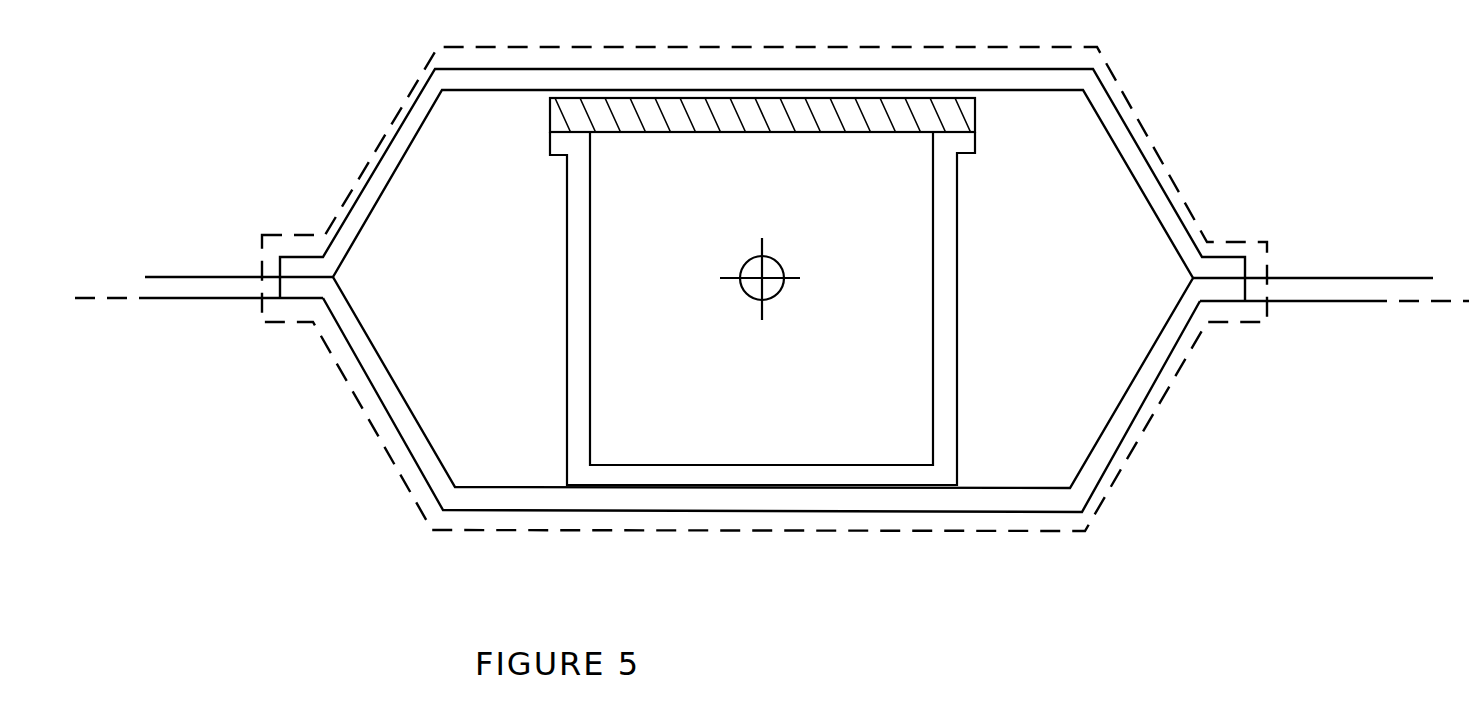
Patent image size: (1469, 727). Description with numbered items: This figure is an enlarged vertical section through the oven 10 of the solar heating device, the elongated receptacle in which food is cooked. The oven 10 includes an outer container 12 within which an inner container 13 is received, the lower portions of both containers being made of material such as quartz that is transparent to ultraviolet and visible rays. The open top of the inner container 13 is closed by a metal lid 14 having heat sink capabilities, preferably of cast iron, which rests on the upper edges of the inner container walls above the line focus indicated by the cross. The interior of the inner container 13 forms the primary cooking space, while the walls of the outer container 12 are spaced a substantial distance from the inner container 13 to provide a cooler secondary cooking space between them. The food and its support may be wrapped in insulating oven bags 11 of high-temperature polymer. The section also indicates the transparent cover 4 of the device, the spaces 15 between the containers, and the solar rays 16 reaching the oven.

The cover 4 is at (221, 256).
The oven 10 is at (517, 538).
The oven bags 11 is at (377, 459).
The outer container 12 is at (420, 489).
The inner container 13 is at (613, 497).
The metal lid 14 is at (535, 112).
The air space 15 is at (920, 559).
The slanted solar rays 16 is at (734, 368).